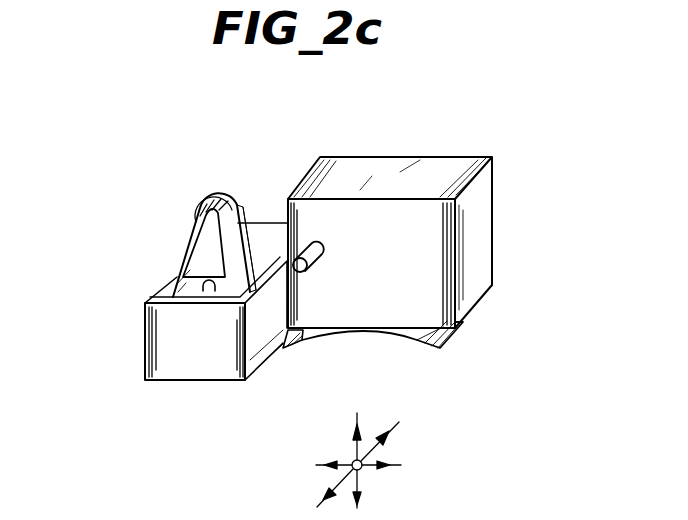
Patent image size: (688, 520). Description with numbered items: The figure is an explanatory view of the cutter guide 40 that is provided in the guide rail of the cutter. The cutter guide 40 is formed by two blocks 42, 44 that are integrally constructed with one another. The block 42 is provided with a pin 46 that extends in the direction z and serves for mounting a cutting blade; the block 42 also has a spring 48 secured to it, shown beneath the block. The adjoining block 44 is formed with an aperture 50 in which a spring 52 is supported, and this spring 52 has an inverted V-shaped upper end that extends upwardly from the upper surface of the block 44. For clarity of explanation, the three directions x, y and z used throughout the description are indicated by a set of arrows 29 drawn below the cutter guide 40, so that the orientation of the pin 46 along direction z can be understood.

The cutter guide 40 is at (296, 191).
The block 42 is at (482, 215).
The block 44 is at (146, 327).
The pin 46 is at (305, 273).
The spring 48 is at (410, 338).
The aperture 50 is at (207, 292).
The spring 52 is at (194, 223).
The coordinate axes 29 is at (356, 482).